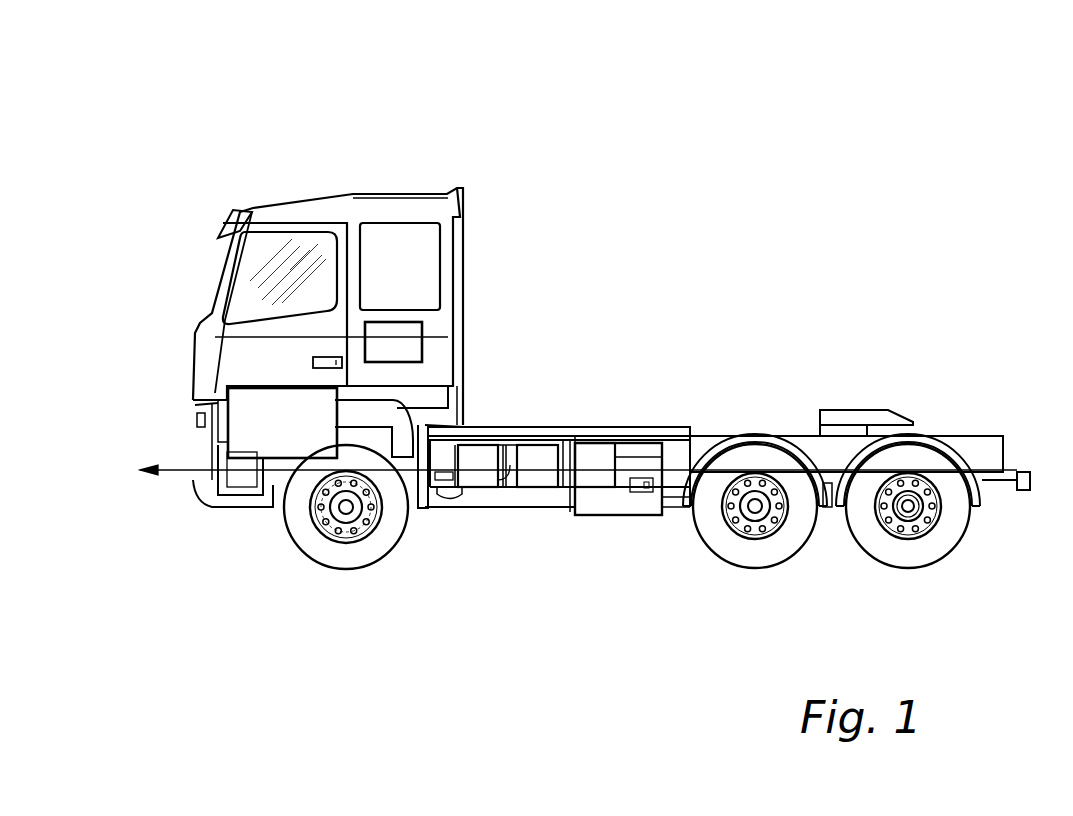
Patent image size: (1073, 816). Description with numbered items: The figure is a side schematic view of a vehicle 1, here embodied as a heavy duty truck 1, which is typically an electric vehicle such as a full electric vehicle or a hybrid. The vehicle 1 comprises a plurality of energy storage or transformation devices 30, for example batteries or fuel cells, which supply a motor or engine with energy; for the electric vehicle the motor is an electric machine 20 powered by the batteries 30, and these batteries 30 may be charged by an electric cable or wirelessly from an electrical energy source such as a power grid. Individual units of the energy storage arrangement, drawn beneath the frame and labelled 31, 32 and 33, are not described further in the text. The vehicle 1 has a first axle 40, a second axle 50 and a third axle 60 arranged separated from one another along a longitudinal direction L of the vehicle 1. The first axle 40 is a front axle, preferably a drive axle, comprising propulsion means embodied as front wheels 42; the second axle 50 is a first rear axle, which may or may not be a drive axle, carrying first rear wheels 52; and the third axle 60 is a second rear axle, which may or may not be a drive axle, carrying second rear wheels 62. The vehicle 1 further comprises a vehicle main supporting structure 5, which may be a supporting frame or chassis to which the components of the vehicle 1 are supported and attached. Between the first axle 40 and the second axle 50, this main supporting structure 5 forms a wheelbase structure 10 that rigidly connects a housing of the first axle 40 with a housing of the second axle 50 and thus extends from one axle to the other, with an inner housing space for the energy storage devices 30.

The vehicle 1 is at (298, 133).
The vehicle main supporting structure 5 is at (715, 362).
The wheelbase structure 10 is at (603, 343).
The electric machine 20 is at (258, 460).
The energy storage or transformation devices 30 is at (588, 560).
The first battery pack 31 is at (481, 480).
The second battery pack 32 is at (538, 480).
The electrical component box 33 is at (597, 478).
The first axle 40 is at (346, 510).
The front wheels 42 is at (365, 566).
The second axle 50 is at (757, 510).
The first rear wheels 52 is at (755, 557).
The third axle 60 is at (910, 510).
The second rear wheels 62 is at (908, 560).
The longitudinal direction L is at (173, 468).